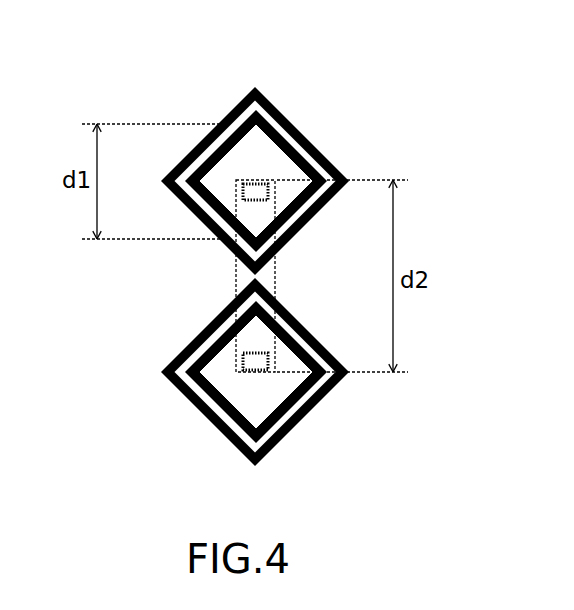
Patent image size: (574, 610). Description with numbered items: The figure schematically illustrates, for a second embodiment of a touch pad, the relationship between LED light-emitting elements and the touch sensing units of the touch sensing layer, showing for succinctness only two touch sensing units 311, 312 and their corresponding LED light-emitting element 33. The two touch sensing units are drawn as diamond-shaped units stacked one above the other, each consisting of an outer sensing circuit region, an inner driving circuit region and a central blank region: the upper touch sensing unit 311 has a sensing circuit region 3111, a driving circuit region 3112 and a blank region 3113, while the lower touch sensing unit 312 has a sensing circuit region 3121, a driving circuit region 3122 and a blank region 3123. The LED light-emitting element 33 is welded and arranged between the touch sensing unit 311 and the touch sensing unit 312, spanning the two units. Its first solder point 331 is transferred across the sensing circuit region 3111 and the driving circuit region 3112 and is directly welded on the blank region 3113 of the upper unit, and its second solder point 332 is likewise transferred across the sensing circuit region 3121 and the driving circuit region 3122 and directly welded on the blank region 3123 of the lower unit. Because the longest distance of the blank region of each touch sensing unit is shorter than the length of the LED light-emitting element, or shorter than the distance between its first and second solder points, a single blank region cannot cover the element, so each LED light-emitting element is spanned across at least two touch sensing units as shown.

The touch sensing unit 311 is at (262, 164).
The sensing circuit region 3111 is at (279, 105).
The driving circuit region 3112 is at (302, 152).
The blank region 3113 is at (214, 180).
The first solder point 331 is at (258, 190).
The LED light-emitting element 33 is at (277, 275).
The touch sensing unit 312 is at (234, 381).
The second solder point 332 is at (258, 358).
The sensing circuit region 3121 is at (182, 393).
The driving circuit region 3122 is at (230, 420).
The blank region 3123 is at (267, 396).